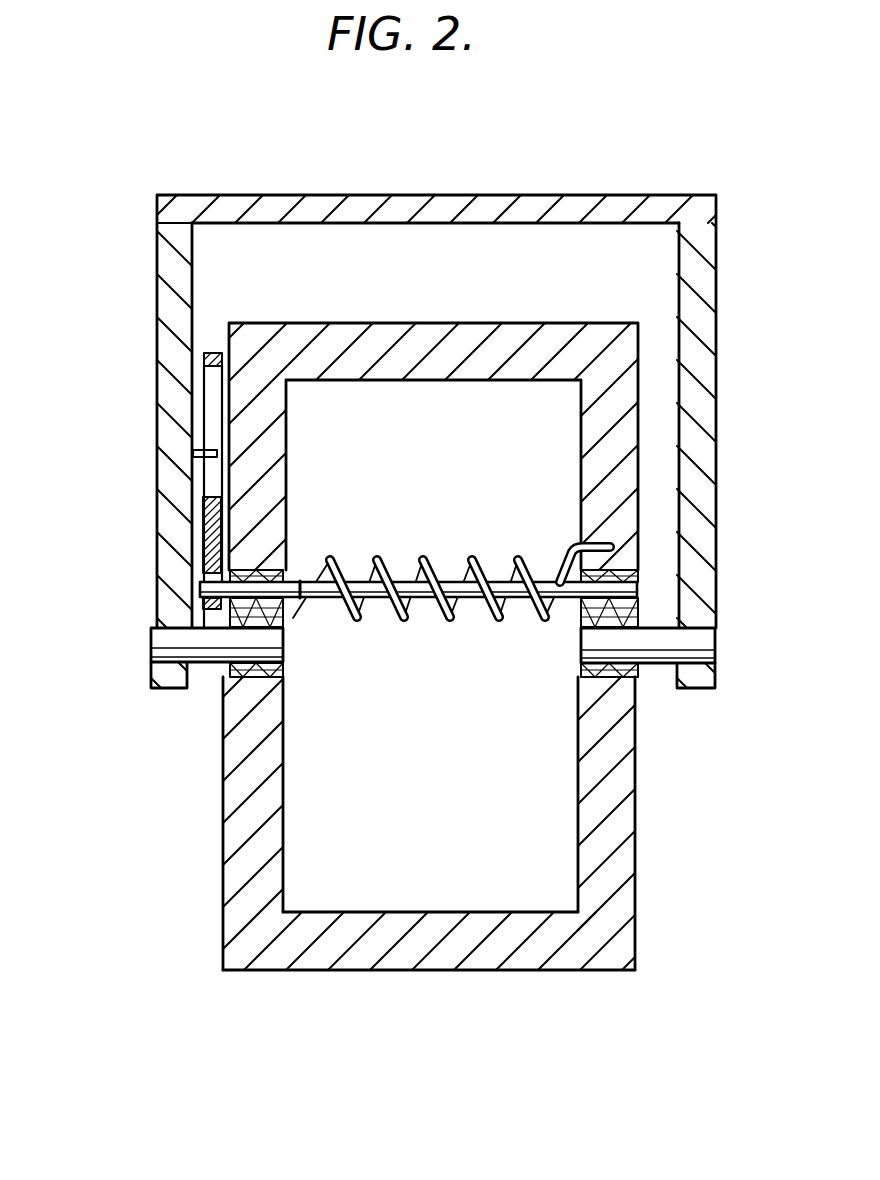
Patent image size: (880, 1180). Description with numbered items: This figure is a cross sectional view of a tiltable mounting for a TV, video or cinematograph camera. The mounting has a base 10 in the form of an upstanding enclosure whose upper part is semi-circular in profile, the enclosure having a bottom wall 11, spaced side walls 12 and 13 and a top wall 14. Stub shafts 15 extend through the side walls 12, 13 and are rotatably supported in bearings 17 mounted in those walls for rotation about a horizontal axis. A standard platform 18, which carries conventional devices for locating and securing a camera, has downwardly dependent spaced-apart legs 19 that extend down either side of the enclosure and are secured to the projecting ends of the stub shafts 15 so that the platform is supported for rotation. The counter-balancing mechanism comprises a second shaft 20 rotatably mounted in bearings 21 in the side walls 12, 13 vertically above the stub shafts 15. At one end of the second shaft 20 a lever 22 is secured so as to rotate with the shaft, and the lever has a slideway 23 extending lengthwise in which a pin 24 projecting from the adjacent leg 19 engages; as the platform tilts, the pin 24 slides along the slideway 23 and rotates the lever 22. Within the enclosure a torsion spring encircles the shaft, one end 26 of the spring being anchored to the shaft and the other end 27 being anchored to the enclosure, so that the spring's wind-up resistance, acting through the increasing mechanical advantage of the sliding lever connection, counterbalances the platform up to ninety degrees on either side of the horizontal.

The base 10 is at (92, 172).
The bottom wall 11 is at (405, 960).
The side wall 12 is at (230, 790).
The side wall 13 is at (624, 800).
The top wall 14 is at (442, 326).
The stub shaft 15 is at (160, 640).
The bearing 17 is at (283, 668).
The platform 18 is at (383, 201).
The leg 19 is at (157, 296).
The second shaft 20 is at (405, 583).
The bearing 21 is at (220, 575).
The lever 22 is at (207, 520).
The slideway 23 is at (208, 380).
The pin 24 is at (210, 447).
The spring end 26 is at (303, 580).
The spring end 27 is at (598, 545).